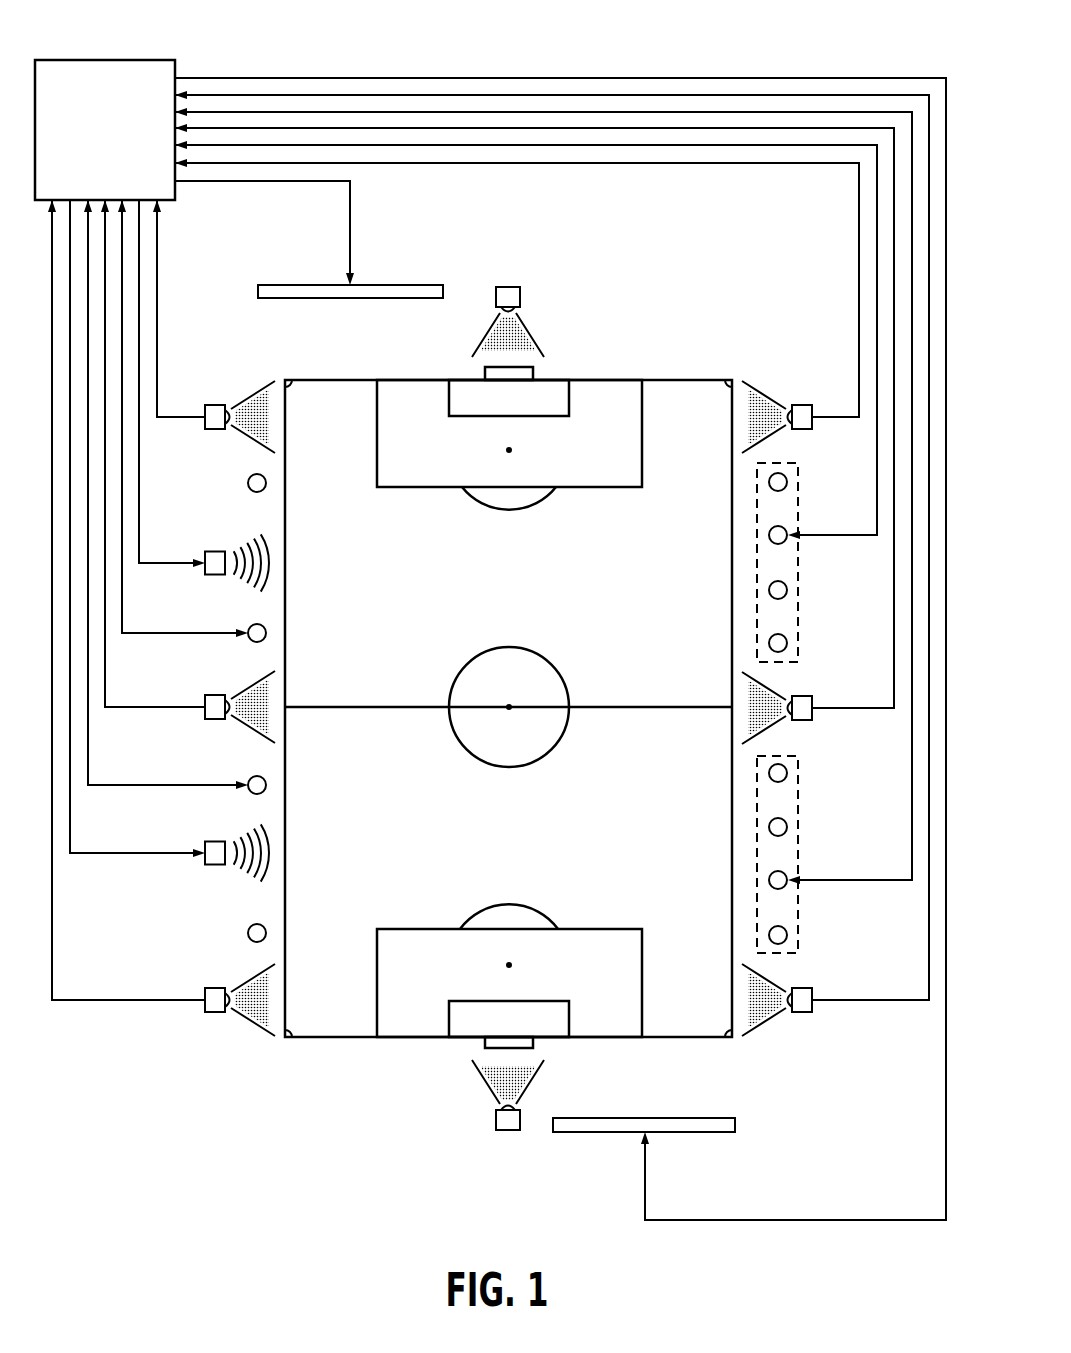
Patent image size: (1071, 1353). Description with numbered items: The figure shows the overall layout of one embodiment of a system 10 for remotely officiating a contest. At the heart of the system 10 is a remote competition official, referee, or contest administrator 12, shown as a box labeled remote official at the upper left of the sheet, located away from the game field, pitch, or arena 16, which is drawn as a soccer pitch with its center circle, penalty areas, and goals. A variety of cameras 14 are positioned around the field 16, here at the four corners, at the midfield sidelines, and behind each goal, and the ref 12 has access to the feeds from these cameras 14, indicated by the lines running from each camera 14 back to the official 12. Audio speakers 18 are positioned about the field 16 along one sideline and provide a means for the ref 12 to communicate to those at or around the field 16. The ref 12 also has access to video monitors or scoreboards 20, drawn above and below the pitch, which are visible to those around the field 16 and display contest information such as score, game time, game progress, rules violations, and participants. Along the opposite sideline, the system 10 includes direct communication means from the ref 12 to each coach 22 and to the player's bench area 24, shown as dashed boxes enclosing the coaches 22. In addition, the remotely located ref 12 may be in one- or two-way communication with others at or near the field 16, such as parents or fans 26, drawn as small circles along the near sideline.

The system 10 is at (811, 39).
The remote official 12 is at (68, 60).
The camera 14 is at (496, 296).
The game field 16 is at (705, 346).
The audio speaker 18 is at (213, 575).
The video monitor or scoreboard 20 is at (282, 285).
The coach 22 is at (781, 545).
The player's bench area 24 is at (798, 512).
The fan 26 is at (252, 491).